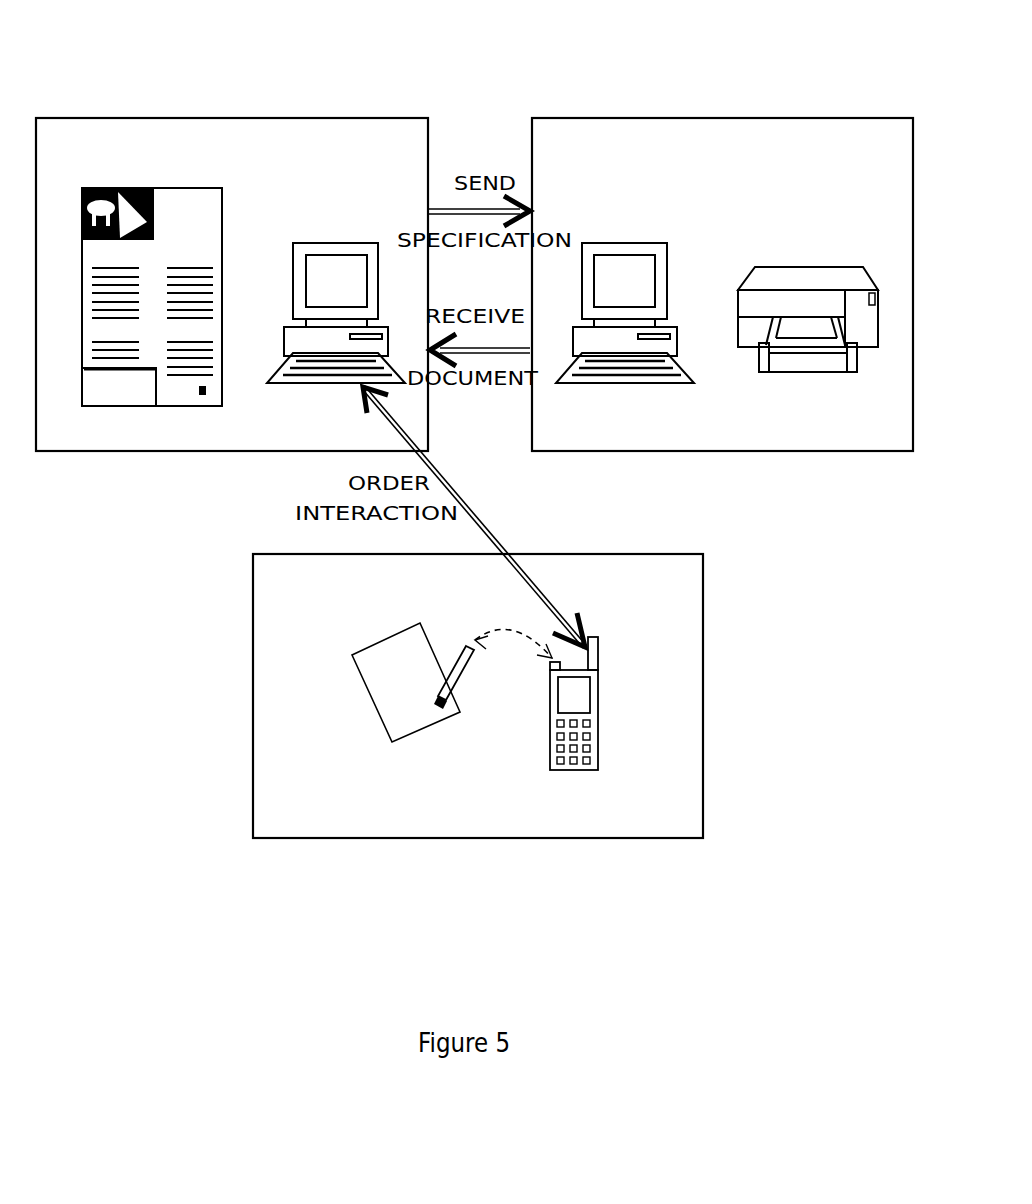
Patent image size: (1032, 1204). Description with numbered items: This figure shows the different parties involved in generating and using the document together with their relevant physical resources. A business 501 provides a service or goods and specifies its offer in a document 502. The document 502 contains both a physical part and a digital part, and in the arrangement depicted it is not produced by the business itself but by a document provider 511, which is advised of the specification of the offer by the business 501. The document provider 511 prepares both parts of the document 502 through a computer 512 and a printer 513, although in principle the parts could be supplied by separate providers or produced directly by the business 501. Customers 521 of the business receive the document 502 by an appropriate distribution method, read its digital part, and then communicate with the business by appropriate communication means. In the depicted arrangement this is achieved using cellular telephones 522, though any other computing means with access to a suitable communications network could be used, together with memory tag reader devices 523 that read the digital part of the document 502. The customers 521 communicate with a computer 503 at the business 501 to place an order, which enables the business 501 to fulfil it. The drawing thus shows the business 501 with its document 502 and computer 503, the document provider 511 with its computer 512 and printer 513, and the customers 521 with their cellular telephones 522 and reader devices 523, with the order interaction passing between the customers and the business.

The business 501 is at (232, 355).
The document 502 is at (161, 203).
The computer 503 is at (346, 214).
The document provider 511 is at (722, 350).
The computer 512 is at (617, 226).
The printer 513 is at (795, 215).
The customers 521 is at (405, 720).
The cellular telephones 522 is at (603, 717).
The memory tag reader devices 523 is at (509, 779).